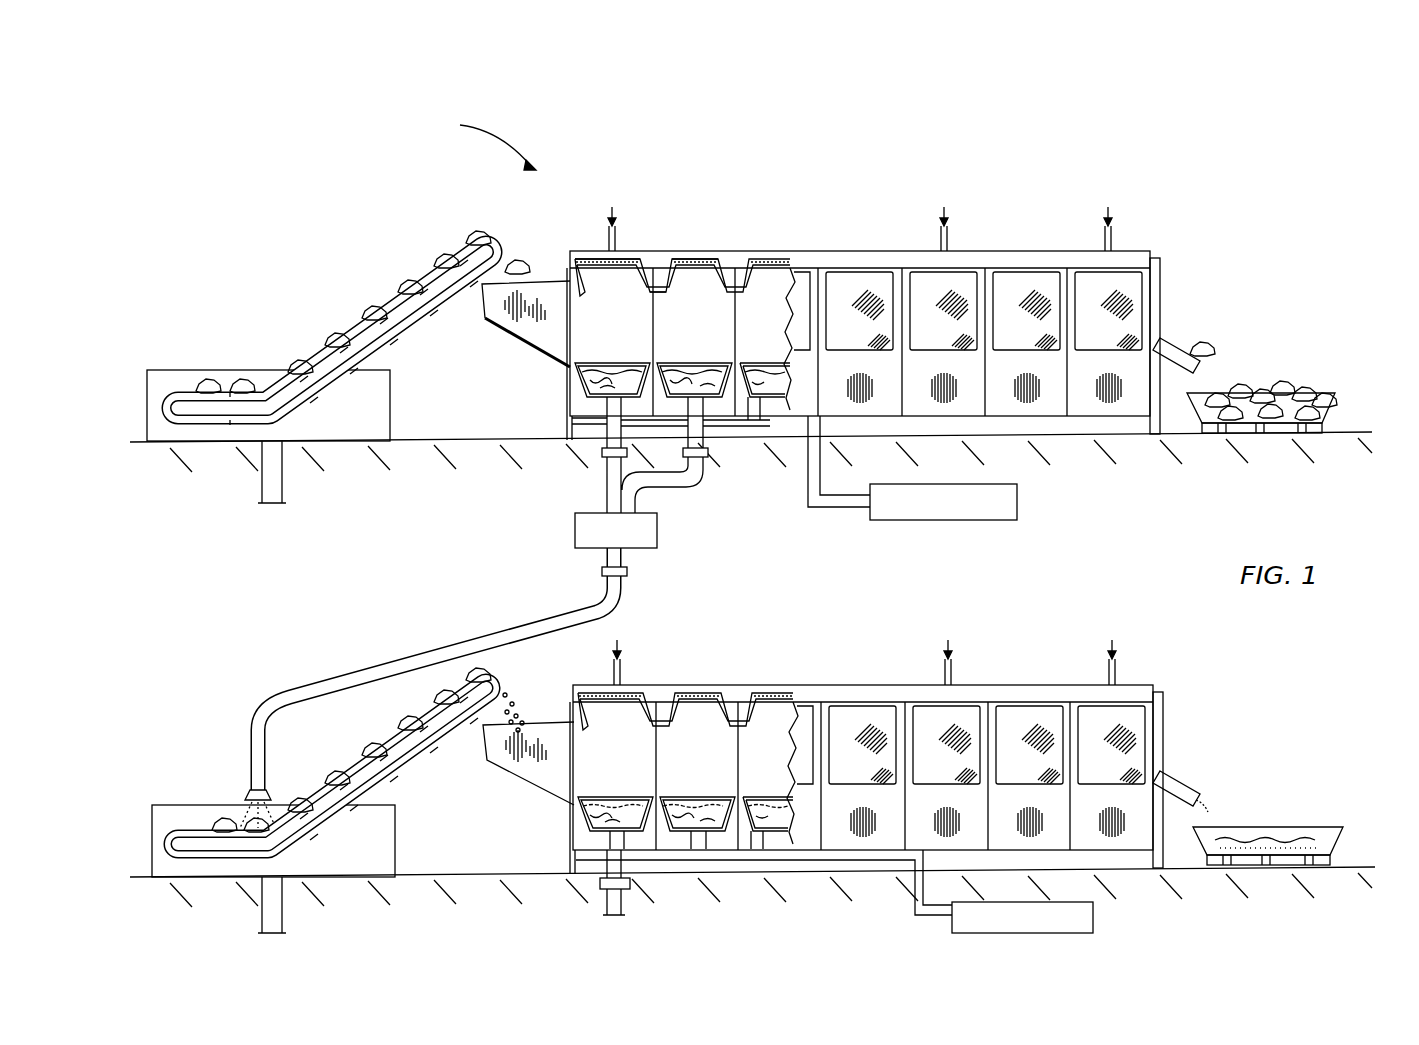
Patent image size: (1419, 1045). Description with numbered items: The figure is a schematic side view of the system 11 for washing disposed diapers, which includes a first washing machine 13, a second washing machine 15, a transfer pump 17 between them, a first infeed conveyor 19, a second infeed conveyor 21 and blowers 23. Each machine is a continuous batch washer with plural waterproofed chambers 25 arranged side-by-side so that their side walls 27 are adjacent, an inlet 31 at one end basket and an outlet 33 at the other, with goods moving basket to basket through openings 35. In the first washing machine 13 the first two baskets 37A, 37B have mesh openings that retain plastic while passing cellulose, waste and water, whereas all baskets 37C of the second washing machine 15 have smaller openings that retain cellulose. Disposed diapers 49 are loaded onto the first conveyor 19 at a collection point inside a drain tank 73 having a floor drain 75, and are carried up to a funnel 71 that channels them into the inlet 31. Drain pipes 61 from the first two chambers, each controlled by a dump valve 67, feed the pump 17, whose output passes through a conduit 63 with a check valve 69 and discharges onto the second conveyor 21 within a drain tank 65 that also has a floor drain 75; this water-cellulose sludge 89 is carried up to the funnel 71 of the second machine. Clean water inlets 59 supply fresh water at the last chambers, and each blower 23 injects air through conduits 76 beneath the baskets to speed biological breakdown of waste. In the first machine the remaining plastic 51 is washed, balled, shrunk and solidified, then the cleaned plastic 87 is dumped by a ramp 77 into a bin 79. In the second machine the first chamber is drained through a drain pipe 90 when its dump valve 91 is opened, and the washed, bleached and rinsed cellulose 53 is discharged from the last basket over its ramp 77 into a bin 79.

The system 11 is at (434, 140).
The first washing machine 13 is at (867, 348).
The second washing machine 15 is at (866, 731).
The transfer pump 17 is at (575, 530).
The first infeed conveyor 19 is at (395, 282).
The second infeed conveyor 21 is at (385, 742).
The blower 23 is at (1017, 505).
The chamber 25 is at (568, 297).
The side wall 27 is at (661, 289).
The inlet 31 is at (538, 335).
The outlet 33 is at (1160, 285).
The opening 35 is at (655, 300).
The first basket 37A is at (612, 278).
The second basket 37B is at (732, 285).
The basket of second washing machine 37C is at (645, 711).
The disposed diapers 49 is at (352, 312).
The plastic 51 is at (745, 380).
The cellulose 53 is at (612, 812).
The clean water inlet 59 is at (609, 243).
The drain pipe 61 is at (607, 482).
The conduit 63 is at (430, 660).
The drain tank 65 is at (205, 805).
The dump valve 67 is at (600, 452).
The check valve 69 is at (630, 572).
The funnel 71 is at (513, 550).
The drain tank 73 is at (180, 370).
The floor drain 75 is at (283, 470).
The air conduit 76 is at (845, 505).
The ramp 77 is at (1175, 340).
The bin 79 is at (1335, 405).
The cleaned plastic 87 is at (1275, 385).
The water-cellulose sludge 89 is at (512, 680).
The drain pipe 90 is at (607, 902).
The dump valve 91 is at (630, 885).